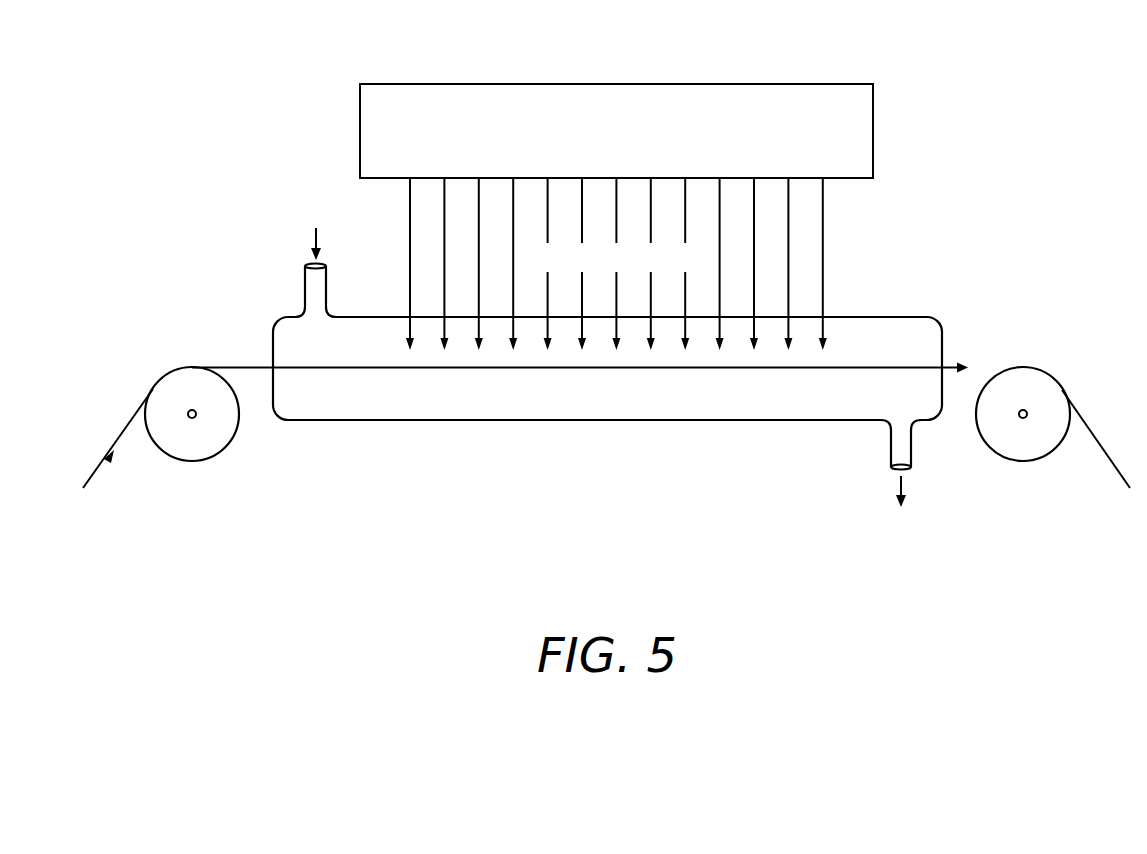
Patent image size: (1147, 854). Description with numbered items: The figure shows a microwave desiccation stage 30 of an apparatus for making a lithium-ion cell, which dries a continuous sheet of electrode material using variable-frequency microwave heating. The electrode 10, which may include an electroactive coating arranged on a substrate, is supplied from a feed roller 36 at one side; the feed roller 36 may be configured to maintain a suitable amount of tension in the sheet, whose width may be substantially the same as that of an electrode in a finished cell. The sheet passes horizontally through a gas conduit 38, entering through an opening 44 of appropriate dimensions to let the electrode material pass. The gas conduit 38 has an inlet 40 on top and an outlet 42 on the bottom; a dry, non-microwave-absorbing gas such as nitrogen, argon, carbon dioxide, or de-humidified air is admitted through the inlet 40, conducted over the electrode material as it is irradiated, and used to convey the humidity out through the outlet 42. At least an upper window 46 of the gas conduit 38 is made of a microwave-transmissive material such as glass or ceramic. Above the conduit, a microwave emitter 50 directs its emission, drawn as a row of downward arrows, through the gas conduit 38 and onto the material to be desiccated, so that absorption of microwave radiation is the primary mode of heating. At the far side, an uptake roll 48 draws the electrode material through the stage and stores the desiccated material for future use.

The microwave desiccation stage 30 is at (985, 90).
The microwave emitter 50 is at (616, 131).
The upper window 46 is at (847, 290).
The gas conduit 38 is at (513, 421).
The inlet 40 is at (303, 289).
The outlet 42 is at (889, 440).
The lithium-ion cell electrode 10 is at (357, 368).
The feed roller 36 is at (192, 414).
The opening 44 is at (252, 359).
The uptake roll 48 is at (1053, 427).